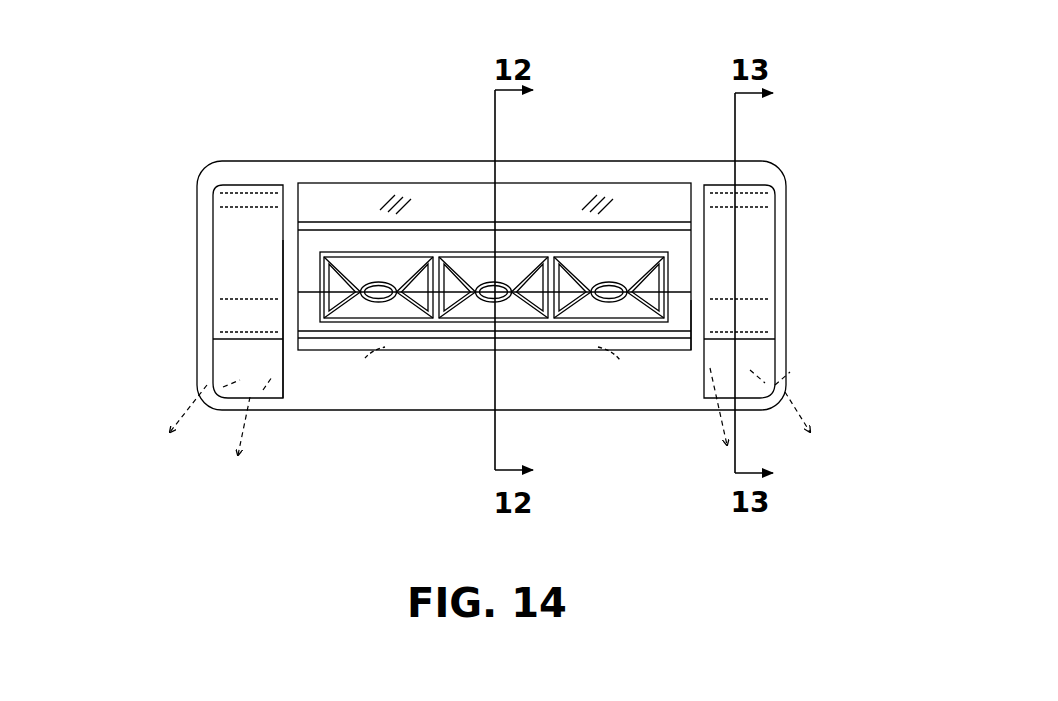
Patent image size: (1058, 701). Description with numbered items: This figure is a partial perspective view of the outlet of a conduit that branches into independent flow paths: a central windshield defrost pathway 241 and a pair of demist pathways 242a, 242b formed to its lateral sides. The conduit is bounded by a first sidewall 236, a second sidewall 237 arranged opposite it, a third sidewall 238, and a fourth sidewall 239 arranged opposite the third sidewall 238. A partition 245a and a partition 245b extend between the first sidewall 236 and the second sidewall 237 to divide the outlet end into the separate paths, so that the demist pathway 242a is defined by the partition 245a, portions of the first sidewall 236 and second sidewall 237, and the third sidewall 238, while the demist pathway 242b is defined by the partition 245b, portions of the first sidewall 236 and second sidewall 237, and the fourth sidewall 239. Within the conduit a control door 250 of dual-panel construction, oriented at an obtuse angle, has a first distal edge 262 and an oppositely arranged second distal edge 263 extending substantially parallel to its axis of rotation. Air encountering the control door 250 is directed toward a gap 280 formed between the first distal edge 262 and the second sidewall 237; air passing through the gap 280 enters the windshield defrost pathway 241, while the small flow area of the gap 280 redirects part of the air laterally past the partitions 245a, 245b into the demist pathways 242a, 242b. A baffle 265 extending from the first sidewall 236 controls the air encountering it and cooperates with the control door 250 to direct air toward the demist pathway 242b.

The first sidewall 236 is at (467, 170).
The second sidewall 237 is at (268, 402).
The third sidewall 238 is at (208, 282).
The fourth sidewall 239 is at (785, 283).
The windshield defrost pathway 241 is at (437, 212).
The demist pathway 242a is at (237, 368).
The demist pathway 242b is at (762, 358).
The partition 245a is at (287, 240).
The partition 245b is at (690, 333).
The control door 250 is at (562, 230).
The first distal edge 262 is at (548, 337).
The second distal edge 263 is at (617, 223).
The baffle 265 is at (243, 228).
The gap 280 is at (407, 342).